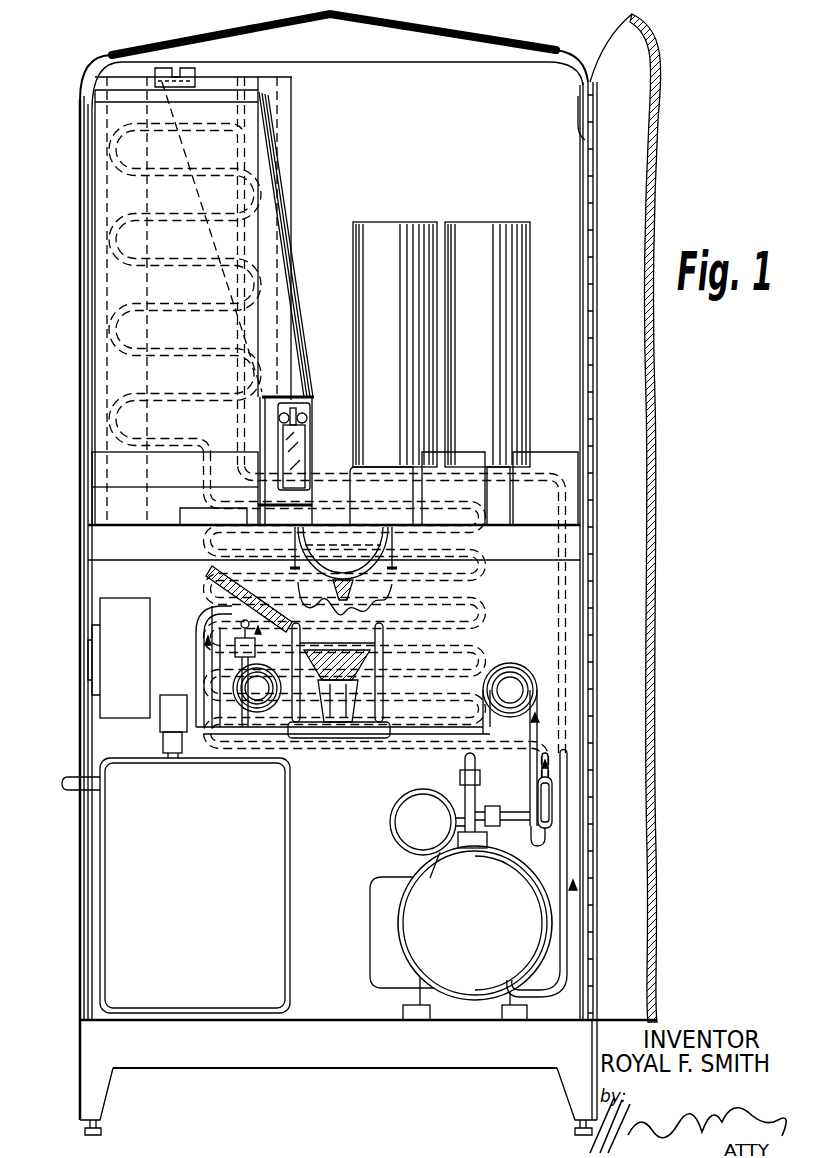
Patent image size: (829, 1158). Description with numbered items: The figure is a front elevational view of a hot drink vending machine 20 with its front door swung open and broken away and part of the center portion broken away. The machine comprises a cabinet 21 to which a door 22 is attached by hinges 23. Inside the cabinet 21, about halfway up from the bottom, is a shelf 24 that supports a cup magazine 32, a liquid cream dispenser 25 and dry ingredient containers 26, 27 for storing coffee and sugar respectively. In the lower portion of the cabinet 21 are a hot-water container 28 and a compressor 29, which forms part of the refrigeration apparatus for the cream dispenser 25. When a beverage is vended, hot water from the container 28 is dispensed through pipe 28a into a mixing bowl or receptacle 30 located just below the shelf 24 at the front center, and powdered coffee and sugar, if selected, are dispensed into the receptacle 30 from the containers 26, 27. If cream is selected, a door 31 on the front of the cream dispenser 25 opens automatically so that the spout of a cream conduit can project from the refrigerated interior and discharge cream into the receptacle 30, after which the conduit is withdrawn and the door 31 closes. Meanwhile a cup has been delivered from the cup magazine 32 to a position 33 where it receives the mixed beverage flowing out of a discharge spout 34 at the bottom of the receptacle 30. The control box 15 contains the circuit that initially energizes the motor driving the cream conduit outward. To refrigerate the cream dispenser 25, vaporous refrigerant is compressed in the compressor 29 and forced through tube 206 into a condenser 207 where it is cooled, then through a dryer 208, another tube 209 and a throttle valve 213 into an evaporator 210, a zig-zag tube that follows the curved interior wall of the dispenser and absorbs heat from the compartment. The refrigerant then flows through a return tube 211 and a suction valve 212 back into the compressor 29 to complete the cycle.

The control box 15 is at (107, 645).
The hot drink vending machine 20 is at (299, 1084).
The cabinet 21 is at (167, 55).
The door 22 is at (642, 116).
The hinges 23 is at (598, 204).
The shelf 24 is at (100, 524).
The liquid cream dispenser 25 is at (288, 344).
The dry ingredient container 26 is at (386, 230).
The dry ingredient container 27 is at (476, 230).
The hot-water container 28 is at (110, 888).
The pipe 28a is at (203, 610).
The compressor 29 is at (527, 930).
The mixing bowl or receptacle 30 is at (362, 540).
The door 31 is at (302, 445).
The cup magazine 32 is at (113, 463).
The cup position 33 is at (355, 693).
The discharge spout 34 is at (352, 590).
The tube 206 is at (566, 963).
The condenser 207 is at (480, 660).
The dryer 208 is at (548, 800).
The tube 209 is at (538, 707).
The evaporator 210 is at (133, 243).
The return tube 211 is at (212, 658).
The suction valve 212 is at (470, 802).
The throttle valve 213 is at (233, 657).